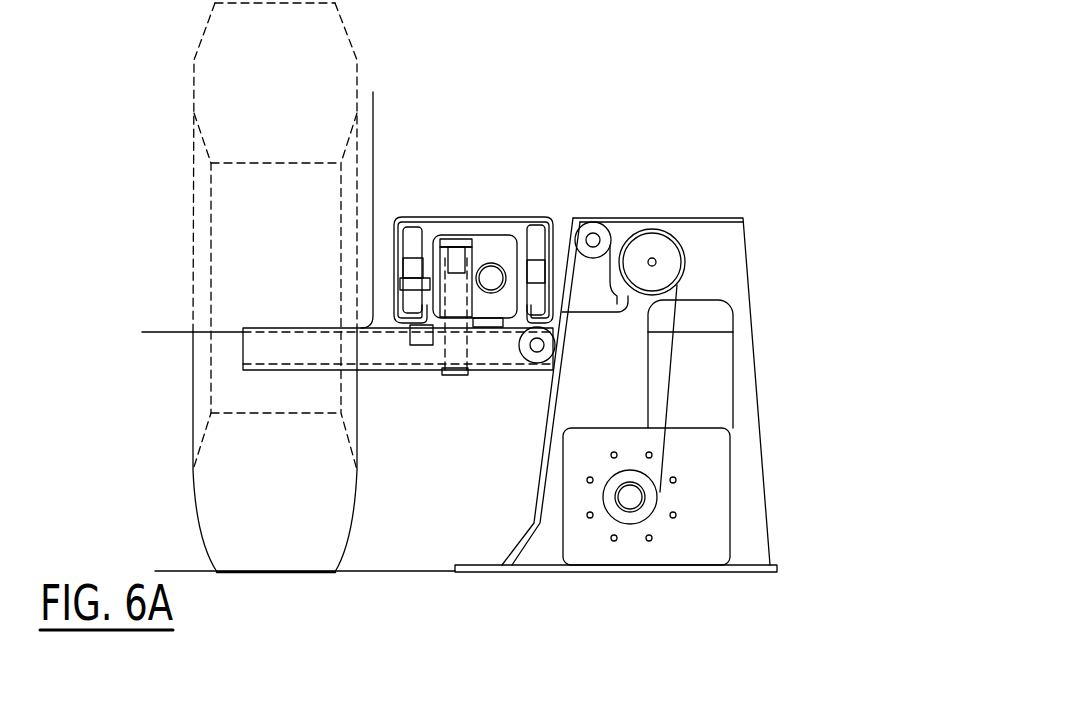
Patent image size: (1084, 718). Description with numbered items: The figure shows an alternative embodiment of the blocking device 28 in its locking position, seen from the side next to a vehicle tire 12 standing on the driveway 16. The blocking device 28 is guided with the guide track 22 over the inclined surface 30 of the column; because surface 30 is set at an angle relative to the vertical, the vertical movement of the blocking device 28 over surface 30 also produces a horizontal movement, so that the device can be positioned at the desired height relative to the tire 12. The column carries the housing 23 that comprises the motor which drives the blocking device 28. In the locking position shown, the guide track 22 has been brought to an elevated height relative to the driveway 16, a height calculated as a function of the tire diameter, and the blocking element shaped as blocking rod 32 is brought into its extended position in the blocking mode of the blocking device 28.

The tire 12 is at (217, 74).
The driveway 16 is at (162, 560).
The guide track 22 is at (541, 215).
The housing 23 is at (730, 258).
The blocking device 28 is at (495, 152).
The inclined surface 30 is at (540, 480).
The blocking rod 32 is at (368, 357).